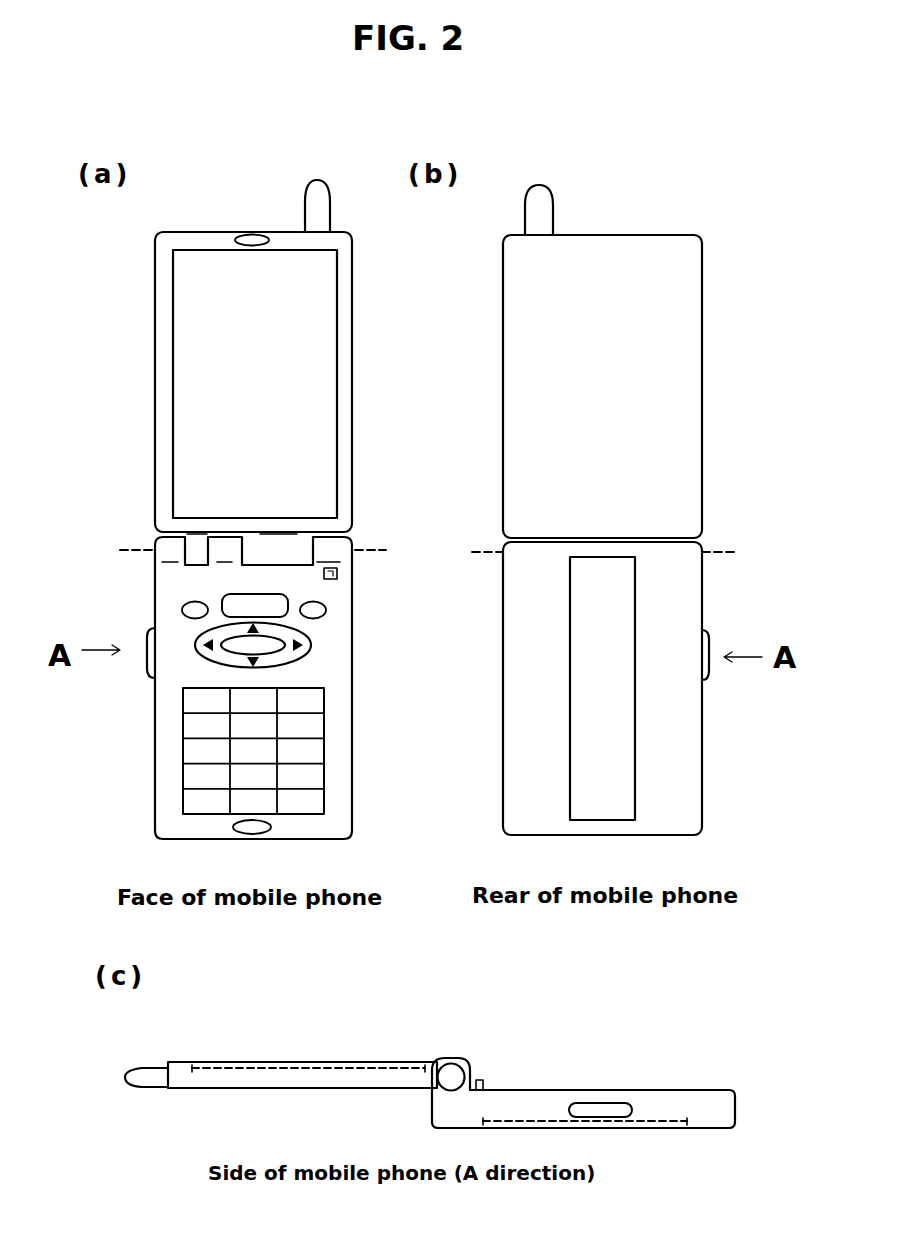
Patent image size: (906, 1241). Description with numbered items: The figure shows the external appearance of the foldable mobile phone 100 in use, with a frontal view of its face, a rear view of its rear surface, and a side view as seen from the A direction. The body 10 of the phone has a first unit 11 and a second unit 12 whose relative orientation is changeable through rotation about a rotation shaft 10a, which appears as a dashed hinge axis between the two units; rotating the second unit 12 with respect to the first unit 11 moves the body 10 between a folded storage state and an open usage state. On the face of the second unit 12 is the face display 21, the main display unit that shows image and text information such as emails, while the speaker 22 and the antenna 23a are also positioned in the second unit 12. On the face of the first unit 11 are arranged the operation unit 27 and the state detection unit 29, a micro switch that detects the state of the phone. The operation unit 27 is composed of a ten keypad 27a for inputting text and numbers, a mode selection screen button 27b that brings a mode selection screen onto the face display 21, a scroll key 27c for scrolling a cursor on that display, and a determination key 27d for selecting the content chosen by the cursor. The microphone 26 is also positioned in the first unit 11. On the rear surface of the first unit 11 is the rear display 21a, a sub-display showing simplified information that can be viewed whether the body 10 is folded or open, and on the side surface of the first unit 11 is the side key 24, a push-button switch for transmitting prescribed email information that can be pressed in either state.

The mobile phone 100 is at (256, 201).
The body 10 is at (75, 450).
The rotation shaft 10a is at (368, 550).
The first unit 11 is at (153, 604).
The second unit 12 is at (153, 500).
The face display 21 is at (338, 301).
The rear display 21a is at (635, 609).
The speaker 22 is at (250, 235).
The antenna 23a is at (322, 196).
The side key 24 is at (147, 665).
The microphone 26 is at (248, 834).
The operation unit 27 is at (348, 656).
The ten keypad 27a is at (325, 724).
The mode selection screen button 27b is at (273, 608).
The scroll key 27c is at (282, 660).
The determination key 27d is at (285, 637).
The state detection unit 29 is at (338, 575).